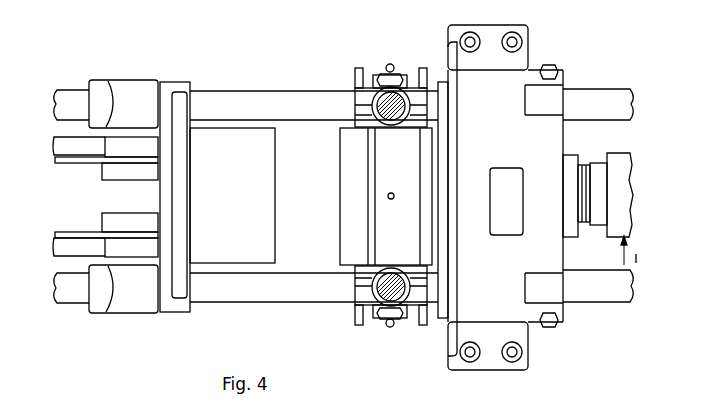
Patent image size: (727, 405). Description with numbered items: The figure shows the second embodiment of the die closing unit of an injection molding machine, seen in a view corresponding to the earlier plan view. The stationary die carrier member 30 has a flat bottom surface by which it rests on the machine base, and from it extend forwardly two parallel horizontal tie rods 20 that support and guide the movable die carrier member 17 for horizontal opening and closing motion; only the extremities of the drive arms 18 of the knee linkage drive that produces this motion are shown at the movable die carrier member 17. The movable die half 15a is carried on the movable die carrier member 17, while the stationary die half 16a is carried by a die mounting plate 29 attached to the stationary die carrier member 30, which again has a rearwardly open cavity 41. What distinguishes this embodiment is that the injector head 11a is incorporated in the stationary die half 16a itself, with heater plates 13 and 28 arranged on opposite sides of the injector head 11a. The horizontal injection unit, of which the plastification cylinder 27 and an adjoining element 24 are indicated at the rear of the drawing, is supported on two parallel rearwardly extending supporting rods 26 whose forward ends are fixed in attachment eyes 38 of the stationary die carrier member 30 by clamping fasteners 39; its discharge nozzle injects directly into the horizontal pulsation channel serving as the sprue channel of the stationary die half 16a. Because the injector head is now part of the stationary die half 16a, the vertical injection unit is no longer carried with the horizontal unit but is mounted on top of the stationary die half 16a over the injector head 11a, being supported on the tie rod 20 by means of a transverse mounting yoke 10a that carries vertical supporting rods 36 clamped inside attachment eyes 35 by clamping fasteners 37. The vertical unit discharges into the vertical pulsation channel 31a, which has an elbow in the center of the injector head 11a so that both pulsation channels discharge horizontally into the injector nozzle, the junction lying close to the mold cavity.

The tie rods 20 is at (75, 98).
The movable die carrier member 17 is at (167, 302).
The drive arms 18 is at (78, 148).
The movable die half 15a is at (232, 140).
The stationary die half 16a is at (345, 130).
The vertical pulsation channel 31a is at (387, 196).
The injector head 11a is at (397, 236).
The transverse mounting yoke 10a is at (421, 73).
The vertical supporting rods 36 is at (367, 78).
The clamping fasteners 37 is at (390, 63).
The attachment eyes 35 is at (391, 126).
The heater plate 13 is at (352, 272).
The heater plate 28 is at (412, 310).
The die mounting plate 29 is at (442, 312).
The attachment eyes 38 is at (566, 82).
The clamping fasteners 39 is at (553, 64).
The stationary die carrier member 30 is at (512, 300).
The rearwardly open cavity 41 is at (506, 216).
The supporting rods 26 is at (593, 98).
The plastification cylinder 27 is at (585, 224).
The shaft 24 is at (620, 168).